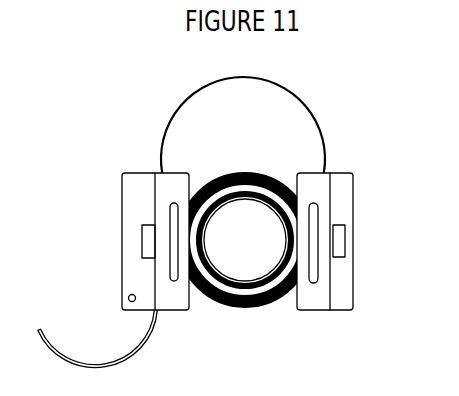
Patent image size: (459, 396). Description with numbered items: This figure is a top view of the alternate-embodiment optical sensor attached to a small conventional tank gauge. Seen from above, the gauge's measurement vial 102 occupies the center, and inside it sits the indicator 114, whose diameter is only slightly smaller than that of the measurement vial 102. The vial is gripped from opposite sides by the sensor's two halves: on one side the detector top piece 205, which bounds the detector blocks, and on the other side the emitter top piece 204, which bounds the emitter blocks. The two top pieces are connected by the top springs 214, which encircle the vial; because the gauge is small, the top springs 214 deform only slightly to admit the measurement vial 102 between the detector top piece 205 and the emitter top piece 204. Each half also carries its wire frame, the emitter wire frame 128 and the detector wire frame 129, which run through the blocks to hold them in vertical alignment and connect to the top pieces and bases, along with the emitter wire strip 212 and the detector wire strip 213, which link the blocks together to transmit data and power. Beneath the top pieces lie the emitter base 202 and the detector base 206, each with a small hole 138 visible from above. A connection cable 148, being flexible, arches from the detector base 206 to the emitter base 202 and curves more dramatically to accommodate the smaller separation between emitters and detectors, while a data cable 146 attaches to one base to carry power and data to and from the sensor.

The measurement vial 102 is at (203, 226).
The indicator 114 is at (205, 258).
The emitter wire frame 128 is at (318, 210).
The detector wire frame 129 is at (168, 213).
The fastener hole 138 is at (128, 298).
The data cable 146 is at (142, 352).
The connection cable 148 is at (312, 115).
The emitter base 202 is at (353, 261).
The emitter top piece 204 is at (330, 185).
The detector top piece 205 is at (157, 190).
The detector base 206 is at (122, 261).
The emitter wire strip 212 is at (345, 234).
The detector wire strip 213 is at (142, 238).
The top spring 214 is at (201, 188).